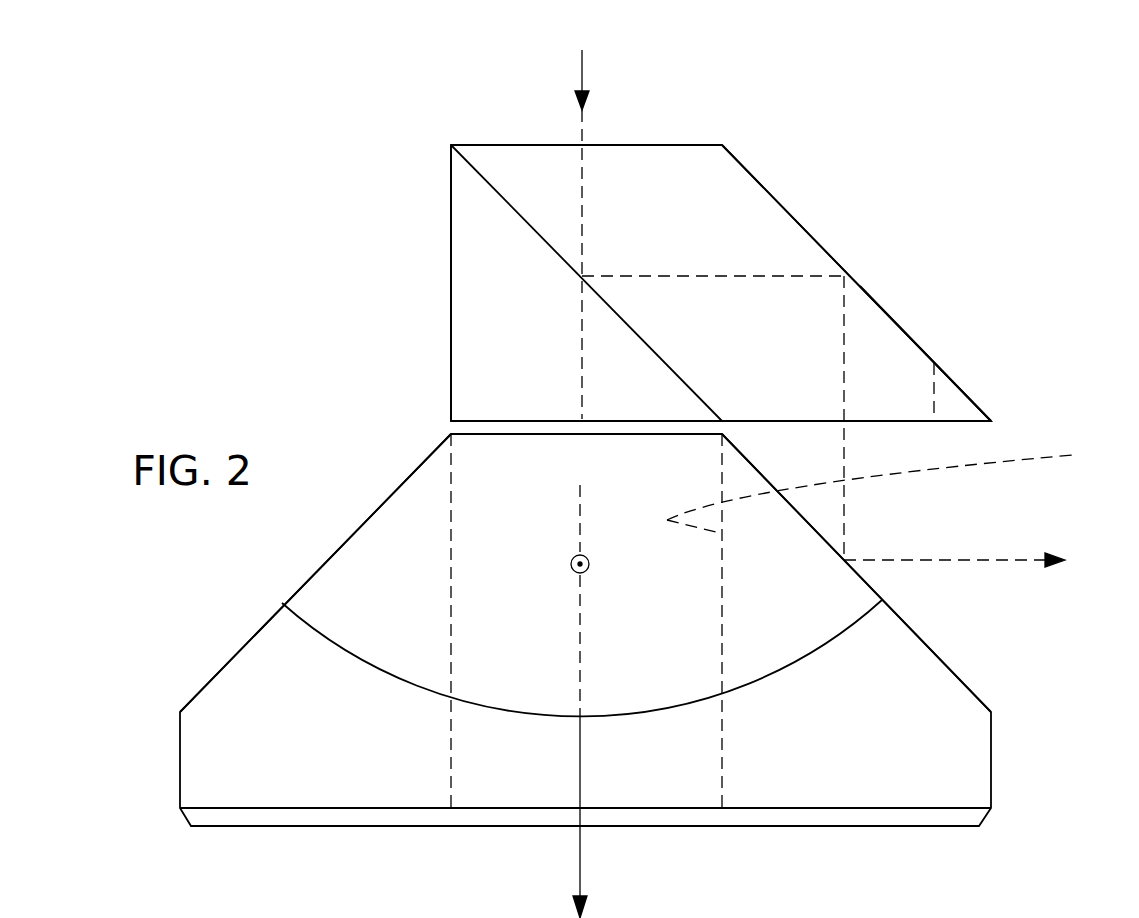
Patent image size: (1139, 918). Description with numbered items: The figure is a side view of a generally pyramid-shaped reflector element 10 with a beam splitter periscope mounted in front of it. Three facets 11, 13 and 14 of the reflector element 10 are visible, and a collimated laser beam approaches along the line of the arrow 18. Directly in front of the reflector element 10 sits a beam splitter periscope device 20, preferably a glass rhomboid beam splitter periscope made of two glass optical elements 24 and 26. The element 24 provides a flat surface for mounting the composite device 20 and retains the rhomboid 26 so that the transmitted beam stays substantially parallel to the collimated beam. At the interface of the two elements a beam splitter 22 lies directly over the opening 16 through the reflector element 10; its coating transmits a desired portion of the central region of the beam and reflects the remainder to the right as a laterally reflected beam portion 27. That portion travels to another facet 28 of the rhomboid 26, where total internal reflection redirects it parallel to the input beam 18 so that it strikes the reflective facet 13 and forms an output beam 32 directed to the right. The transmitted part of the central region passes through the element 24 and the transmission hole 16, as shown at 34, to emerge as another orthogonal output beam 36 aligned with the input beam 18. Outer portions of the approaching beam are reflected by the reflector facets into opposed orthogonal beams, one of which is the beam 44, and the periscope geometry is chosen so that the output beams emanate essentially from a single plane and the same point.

The reflector element 10 is at (942, 697).
The facet 11 is at (387, 500).
The reflective facet 13 is at (817, 530).
The facet 14 is at (616, 506).
The opening 16 is at (889, 487).
The collimated laser beam 18 is at (582, 73).
The beam splitter periscope device 20 is at (880, 205).
The beam splitter 22 is at (530, 222).
The glass optical element 24 is at (468, 345).
The rhomboid 26 is at (772, 225).
The laterally reflected beam portion 27 is at (625, 272).
The facet 28 is at (867, 298).
The output beam 32 is at (987, 560).
The transmitted beam path 34 is at (580, 635).
The output beam 36 is at (580, 857).
The orthogonal beam 44 is at (569, 564).